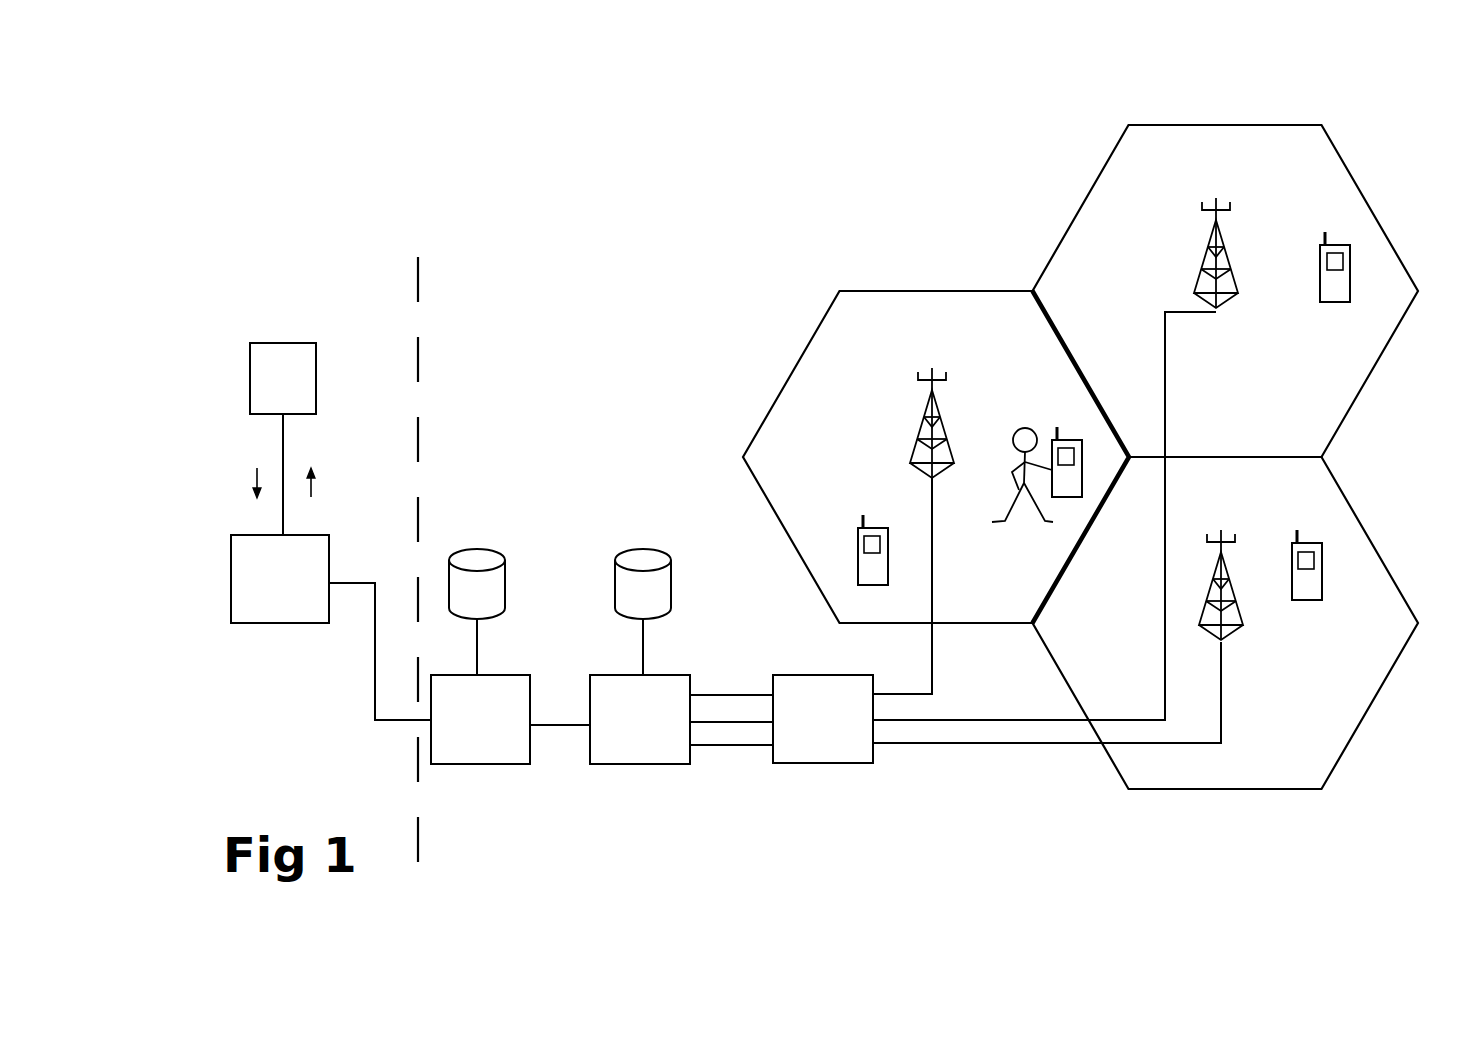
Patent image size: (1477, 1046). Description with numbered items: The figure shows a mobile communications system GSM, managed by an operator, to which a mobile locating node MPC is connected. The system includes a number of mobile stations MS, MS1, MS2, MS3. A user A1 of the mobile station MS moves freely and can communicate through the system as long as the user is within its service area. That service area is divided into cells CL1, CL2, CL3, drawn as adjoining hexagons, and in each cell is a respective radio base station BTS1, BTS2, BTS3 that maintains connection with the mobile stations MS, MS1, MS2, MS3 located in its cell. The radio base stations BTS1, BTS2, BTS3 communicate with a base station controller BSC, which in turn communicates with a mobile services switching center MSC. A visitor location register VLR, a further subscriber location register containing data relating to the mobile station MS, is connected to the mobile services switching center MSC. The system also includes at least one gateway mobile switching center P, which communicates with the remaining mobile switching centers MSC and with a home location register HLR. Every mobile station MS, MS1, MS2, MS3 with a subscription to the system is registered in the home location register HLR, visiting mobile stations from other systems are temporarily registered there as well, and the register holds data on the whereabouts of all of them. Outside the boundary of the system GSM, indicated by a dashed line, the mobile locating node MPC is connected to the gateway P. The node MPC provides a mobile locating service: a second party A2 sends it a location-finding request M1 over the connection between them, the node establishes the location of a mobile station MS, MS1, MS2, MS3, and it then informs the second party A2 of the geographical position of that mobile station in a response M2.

The mobile communications system GSM is at (398, 299).
The second party A2 is at (272, 378).
The location-finding request M1 is at (253, 482).
The response M2 is at (313, 487).
The mobile locating node MPC is at (280, 586).
The home location register HLR is at (480, 560).
The visitor location register VLR is at (646, 560).
The GMSC (Gateway Mobile Switching Center) P is at (491, 752).
The mobile services switching center MSC is at (641, 750).
The base station controller BSC is at (823, 750).
The cell CL1 is at (868, 386).
The cell CL2 is at (1160, 230).
The cell CL3 is at (1155, 594).
The radio base station BTS1 is at (940, 435).
The radio base station BTS2 is at (1222, 268).
The radio base station BTS3 is at (1226, 598).
The mobile station MS is at (1072, 432).
The mobile station MS1 is at (858, 558).
The mobile station MS2 is at (1332, 265).
The mobile station MS3 is at (1313, 562).
The user A1 is at (1013, 470).